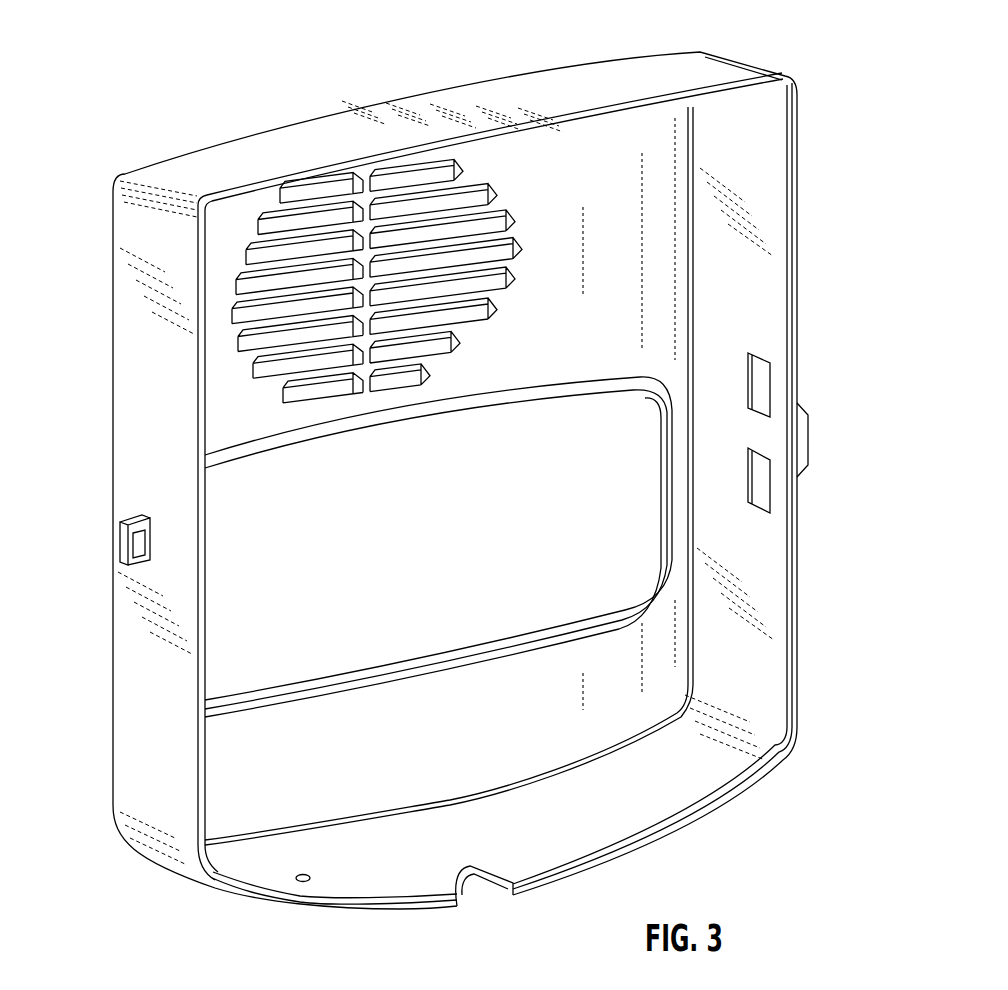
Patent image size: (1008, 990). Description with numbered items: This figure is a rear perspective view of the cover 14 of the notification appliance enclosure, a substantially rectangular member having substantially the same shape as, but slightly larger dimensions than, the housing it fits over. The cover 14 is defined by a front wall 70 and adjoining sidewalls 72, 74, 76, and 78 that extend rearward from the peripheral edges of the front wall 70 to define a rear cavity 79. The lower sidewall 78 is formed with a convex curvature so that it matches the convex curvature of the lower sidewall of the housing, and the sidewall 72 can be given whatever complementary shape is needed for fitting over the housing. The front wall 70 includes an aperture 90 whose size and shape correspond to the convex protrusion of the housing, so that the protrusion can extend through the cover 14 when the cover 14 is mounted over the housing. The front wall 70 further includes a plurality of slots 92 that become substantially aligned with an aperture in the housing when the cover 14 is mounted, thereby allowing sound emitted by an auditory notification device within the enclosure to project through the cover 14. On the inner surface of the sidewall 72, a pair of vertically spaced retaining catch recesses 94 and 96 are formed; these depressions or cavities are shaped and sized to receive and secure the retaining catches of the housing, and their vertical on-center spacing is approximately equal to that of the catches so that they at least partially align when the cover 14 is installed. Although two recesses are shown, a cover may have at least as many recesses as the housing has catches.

The cover 14 is at (135, 133).
The front wall 70 is at (593, 190).
The sidewall 72 is at (752, 307).
The sidewall 74 is at (478, 108).
The sidewall 76 is at (152, 365).
The lower sidewall 78 is at (272, 868).
The rear cavity 79 is at (636, 266).
The aperture 90 is at (419, 548).
The slots 92 is at (332, 244).
The retaining catch recess 94 is at (763, 379).
The retaining catch recess 96 is at (766, 484).